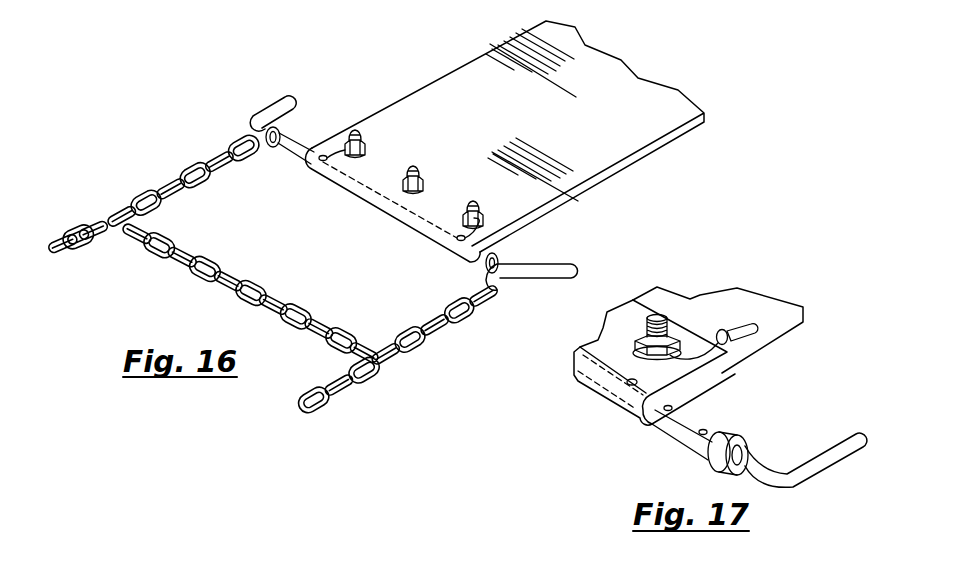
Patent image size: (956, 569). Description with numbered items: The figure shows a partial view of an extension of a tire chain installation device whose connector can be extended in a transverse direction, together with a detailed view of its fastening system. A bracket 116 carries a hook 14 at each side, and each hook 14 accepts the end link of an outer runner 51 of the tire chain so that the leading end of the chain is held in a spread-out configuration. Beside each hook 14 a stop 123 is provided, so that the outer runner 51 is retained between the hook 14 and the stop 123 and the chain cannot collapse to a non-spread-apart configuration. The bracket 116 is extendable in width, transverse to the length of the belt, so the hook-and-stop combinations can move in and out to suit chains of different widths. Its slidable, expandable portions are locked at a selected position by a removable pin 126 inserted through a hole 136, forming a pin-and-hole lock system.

In FIG. 16, the hook 14 is at (277, 106).
In FIG. 17, the hook 14 is at (824, 458).
In FIG. 16, the outer runner 51 is at (223, 147).
In FIG. 16, the bracket 116 is at (283, 162).
In FIG. 16, the stop 123 is at (281, 130).
In FIG. 17, the stop 123 is at (734, 436).
In FIG. 16, the removable pin 126 is at (320, 162).
In FIG. 17, the removable pin 126 is at (748, 331).
In FIG. 16, the hole 136 is at (309, 160).
In FIG. 17, the hole 136 is at (703, 430).